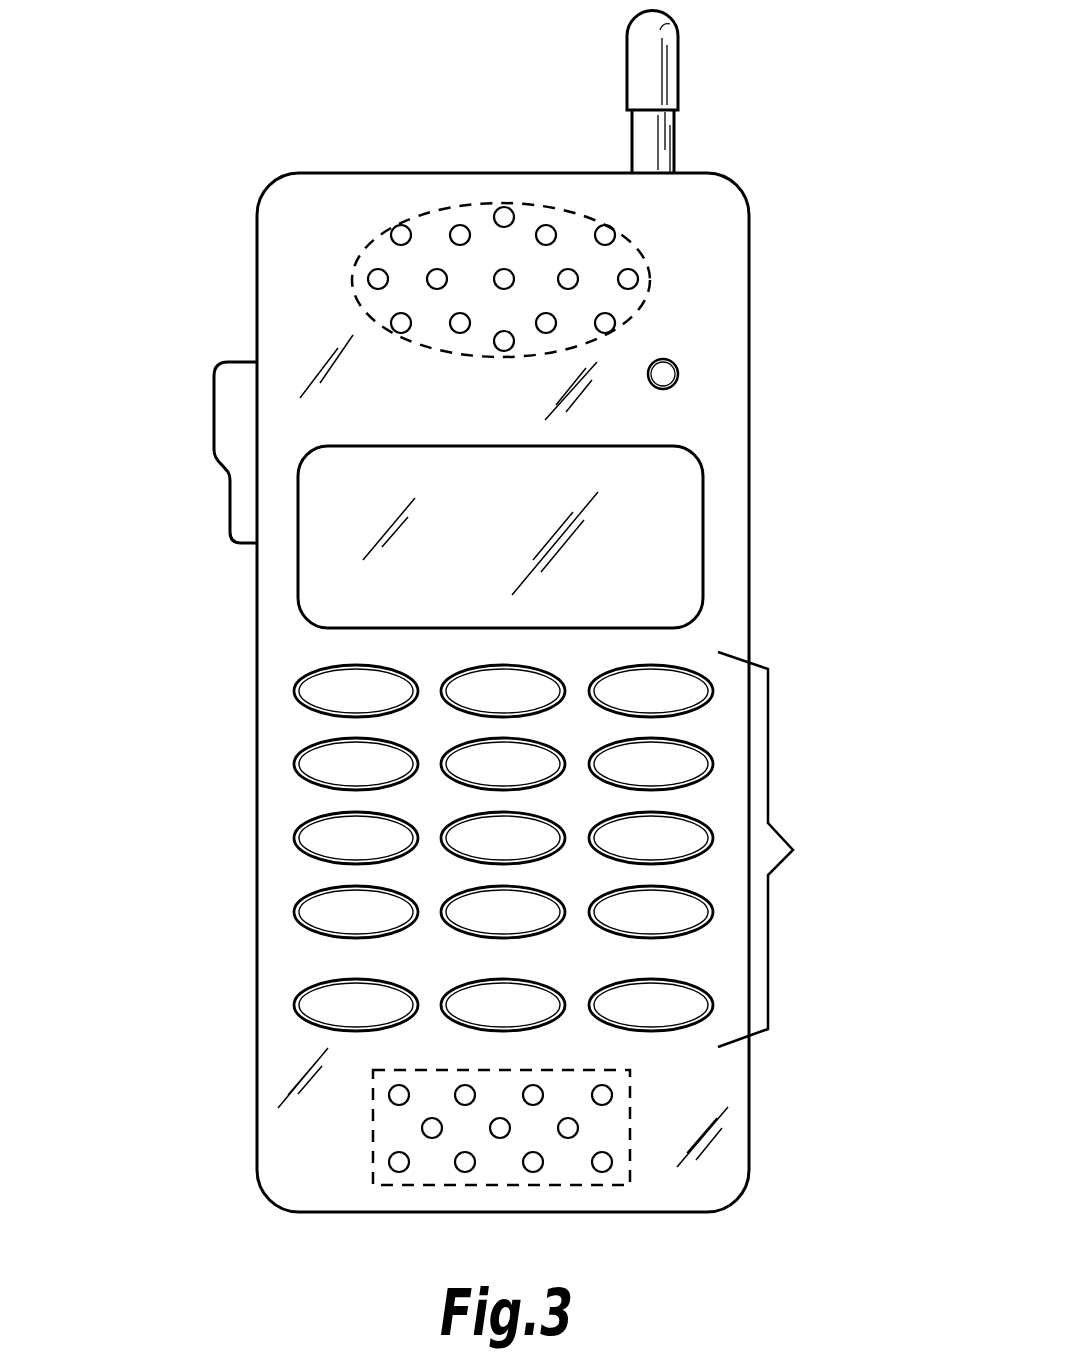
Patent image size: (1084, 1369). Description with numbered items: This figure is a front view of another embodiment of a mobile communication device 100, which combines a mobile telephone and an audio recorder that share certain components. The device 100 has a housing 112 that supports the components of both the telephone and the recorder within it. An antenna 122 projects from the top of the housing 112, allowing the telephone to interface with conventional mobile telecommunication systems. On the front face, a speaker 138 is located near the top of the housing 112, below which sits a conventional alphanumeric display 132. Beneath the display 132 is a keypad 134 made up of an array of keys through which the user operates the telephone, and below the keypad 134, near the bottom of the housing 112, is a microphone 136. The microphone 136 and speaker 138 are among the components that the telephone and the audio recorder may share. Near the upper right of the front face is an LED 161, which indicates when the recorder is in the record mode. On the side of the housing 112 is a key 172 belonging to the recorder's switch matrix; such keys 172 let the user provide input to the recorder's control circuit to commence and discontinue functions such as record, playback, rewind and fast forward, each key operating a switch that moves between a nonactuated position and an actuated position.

The mobile communication device 100 is at (762, 193).
The housing 112 is at (720, 307).
The antenna 122 is at (650, 43).
The alphanumeric display 132 is at (678, 547).
The keypad 134 is at (793, 850).
The microphone 136 is at (612, 1127).
The speaker 138 is at (530, 213).
The LED 161 is at (663, 374).
The key 172 is at (233, 432).